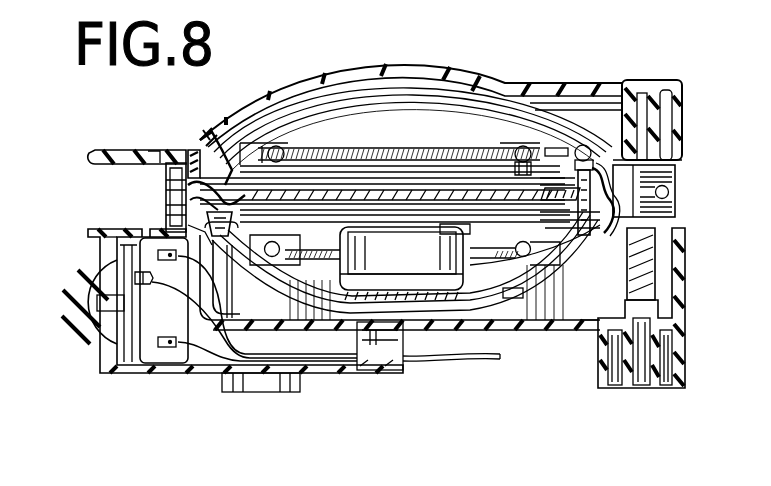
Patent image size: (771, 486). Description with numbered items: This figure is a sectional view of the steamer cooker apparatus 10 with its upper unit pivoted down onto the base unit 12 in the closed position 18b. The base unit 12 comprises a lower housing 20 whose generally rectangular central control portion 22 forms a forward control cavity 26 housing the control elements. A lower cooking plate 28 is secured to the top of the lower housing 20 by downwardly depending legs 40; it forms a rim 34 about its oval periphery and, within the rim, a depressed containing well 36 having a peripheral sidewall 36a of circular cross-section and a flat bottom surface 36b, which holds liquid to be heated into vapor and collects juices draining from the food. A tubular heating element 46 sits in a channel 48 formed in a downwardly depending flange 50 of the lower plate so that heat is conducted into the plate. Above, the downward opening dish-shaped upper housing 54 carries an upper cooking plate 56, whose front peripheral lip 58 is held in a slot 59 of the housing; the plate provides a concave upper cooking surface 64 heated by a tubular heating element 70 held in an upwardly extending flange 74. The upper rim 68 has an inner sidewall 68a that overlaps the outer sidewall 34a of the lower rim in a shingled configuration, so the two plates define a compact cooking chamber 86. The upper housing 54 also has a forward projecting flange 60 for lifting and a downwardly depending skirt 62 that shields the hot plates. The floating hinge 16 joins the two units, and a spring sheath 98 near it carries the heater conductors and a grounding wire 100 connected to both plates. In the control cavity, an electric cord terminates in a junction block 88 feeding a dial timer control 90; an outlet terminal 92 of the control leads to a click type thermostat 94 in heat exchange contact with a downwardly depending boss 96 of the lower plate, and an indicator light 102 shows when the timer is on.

The steamer cooker apparatus 10 is at (268, 425).
The base unit 12 is at (688, 292).
The floating hinge 16 is at (688, 193).
The closed position 18b is at (497, 400).
The lower housing 20 is at (582, 332).
The central control portion 22 is at (165, 375).
The forward control cavity 26 is at (290, 375).
The lower cooking plate 28 is at (610, 232).
The rim 34 is at (166, 192).
The outer sidewall 34a is at (240, 162).
The containing well 36 is at (368, 235).
The peripheral sidewall 36a is at (428, 248).
The flat bottom surface 36b is at (425, 288).
The downwardly depending legs 40 is at (175, 225).
The tubular heating element 46 is at (270, 260).
The channel 48 is at (342, 290).
The downwardly depending flange 50 is at (318, 166).
The upper housing 54 is at (308, 76).
The upper cooking plate 56 is at (406, 165).
The front peripheral lip 58 is at (739, 483).
The slot 59 is at (158, 149).
The forward projecting flange 60 is at (120, 149).
The downwardly depending skirt 62 is at (166, 174).
The upper cooking surface 64 is at (438, 188).
The upper rim 68 is at (195, 149).
The inner sidewall 68a is at (202, 140).
The tubular heating element 70 is at (475, 150).
The upwardly extending flange 74 is at (305, 160).
The cooking chamber 86 is at (475, 205).
The junction block 88 is at (372, 371).
The dial timer control 90 is at (58, 305).
The outlet terminal 92 is at (110, 238).
The click type thermostat 94 is at (490, 255).
The downwardly depending boss 96 is at (570, 250).
The spring sheath 98 is at (670, 178).
The grounding wire 100 is at (608, 156).
The indicator light 102 is at (143, 282).